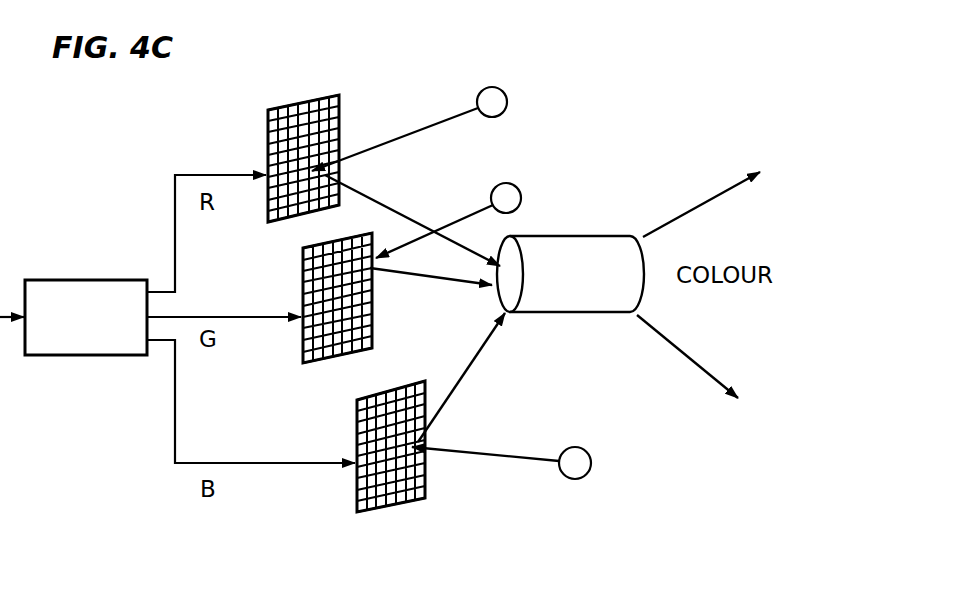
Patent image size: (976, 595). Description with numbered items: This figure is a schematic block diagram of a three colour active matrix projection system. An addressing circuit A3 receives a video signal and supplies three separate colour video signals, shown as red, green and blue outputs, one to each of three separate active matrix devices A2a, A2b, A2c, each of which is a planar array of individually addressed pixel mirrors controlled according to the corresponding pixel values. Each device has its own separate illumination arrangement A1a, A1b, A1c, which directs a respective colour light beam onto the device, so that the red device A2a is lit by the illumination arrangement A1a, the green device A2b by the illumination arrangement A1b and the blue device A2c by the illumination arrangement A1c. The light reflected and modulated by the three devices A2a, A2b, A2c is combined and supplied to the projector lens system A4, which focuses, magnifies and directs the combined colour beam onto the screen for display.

The illumination arrangement A1a is at (507, 97).
The illumination arrangement A1b is at (521, 196).
The illumination arrangement A1c is at (591, 468).
The active matrix device A2a is at (340, 118).
The active matrix device A2b is at (373, 318).
The active matrix device A2c is at (420, 500).
The addressing circuit A3 is at (117, 356).
The projector lens system A4 is at (606, 313).